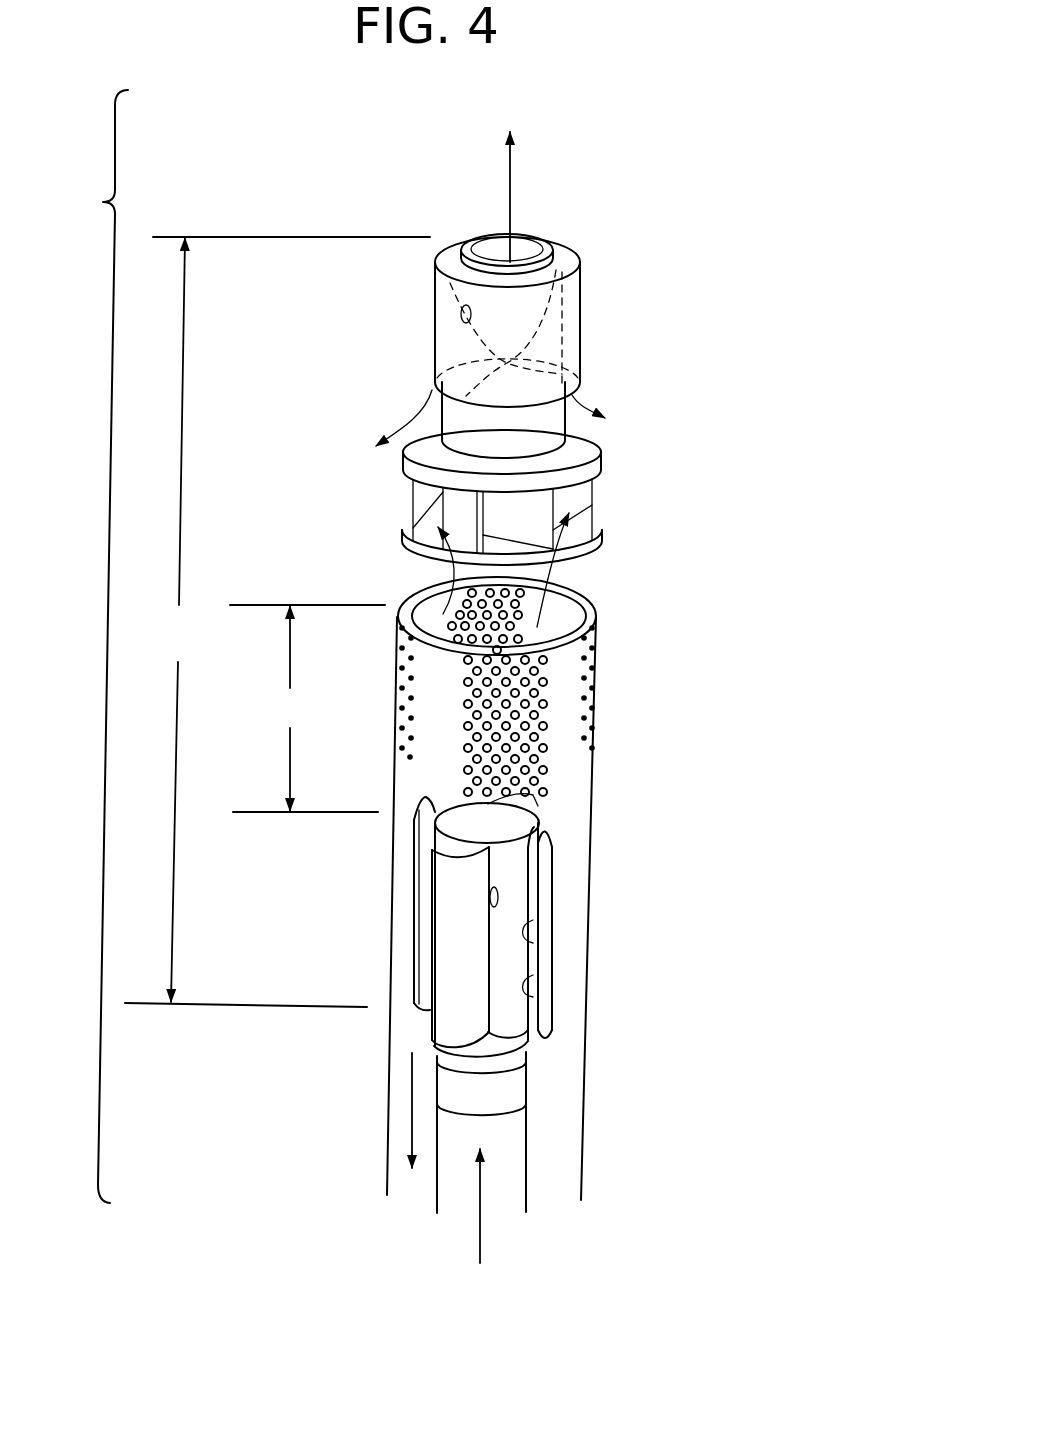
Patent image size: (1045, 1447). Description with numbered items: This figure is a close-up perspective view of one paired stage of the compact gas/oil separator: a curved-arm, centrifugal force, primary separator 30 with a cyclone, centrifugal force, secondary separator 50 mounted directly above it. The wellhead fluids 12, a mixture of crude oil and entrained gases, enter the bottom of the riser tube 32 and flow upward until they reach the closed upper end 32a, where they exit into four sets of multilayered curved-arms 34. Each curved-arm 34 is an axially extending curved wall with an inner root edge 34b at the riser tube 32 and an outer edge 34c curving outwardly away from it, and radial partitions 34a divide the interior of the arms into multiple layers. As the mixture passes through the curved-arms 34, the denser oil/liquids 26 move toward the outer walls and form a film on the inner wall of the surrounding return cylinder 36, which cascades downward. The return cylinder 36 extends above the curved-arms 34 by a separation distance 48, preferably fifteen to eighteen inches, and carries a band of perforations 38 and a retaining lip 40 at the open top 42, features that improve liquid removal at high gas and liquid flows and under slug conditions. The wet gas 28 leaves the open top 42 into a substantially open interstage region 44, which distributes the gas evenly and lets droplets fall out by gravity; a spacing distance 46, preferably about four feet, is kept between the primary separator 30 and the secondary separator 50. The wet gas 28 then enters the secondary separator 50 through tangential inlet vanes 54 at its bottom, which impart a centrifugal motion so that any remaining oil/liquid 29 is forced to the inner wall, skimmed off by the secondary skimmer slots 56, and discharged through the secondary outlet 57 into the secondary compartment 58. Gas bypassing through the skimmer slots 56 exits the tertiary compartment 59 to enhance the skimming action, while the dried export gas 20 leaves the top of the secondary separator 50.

The wellhead fluids 12 is at (483, 1215).
The separated gases 20 is at (505, 181).
The oil/liquids 26 is at (407, 1102).
The wet gas 28 is at (450, 556).
The remaining oil/liquid 29 is at (402, 410).
The curved-arm centrifugal force primary separator 30 is at (627, 827).
The riser tube 32 is at (530, 1148).
The closed upper end 32a is at (512, 822).
The multilayered curved-arms 34 is at (495, 922).
The radial partitions 34a is at (540, 940).
The inner root edge 34b is at (490, 906).
The outer edge 34c is at (428, 962).
The return cylinder 36 is at (588, 1037).
The perforations 38 is at (540, 705).
The retaining lip 40 is at (598, 610).
The open top 42 is at (425, 617).
The interstage region 44 is at (640, 559).
The spacing distance 46 is at (277, 622).
The separation distance 48 is at (307, 708).
The cyclone centrifugal force secondary separator 50 is at (590, 343).
The tangential inlet vanes 54 is at (582, 497).
The secondary skimmer slots 56 is at (461, 310).
The secondary outlet 57 is at (522, 255).
The secondary compartment 58 is at (328, 142).
The tertiary compartment 59 is at (297, 379).